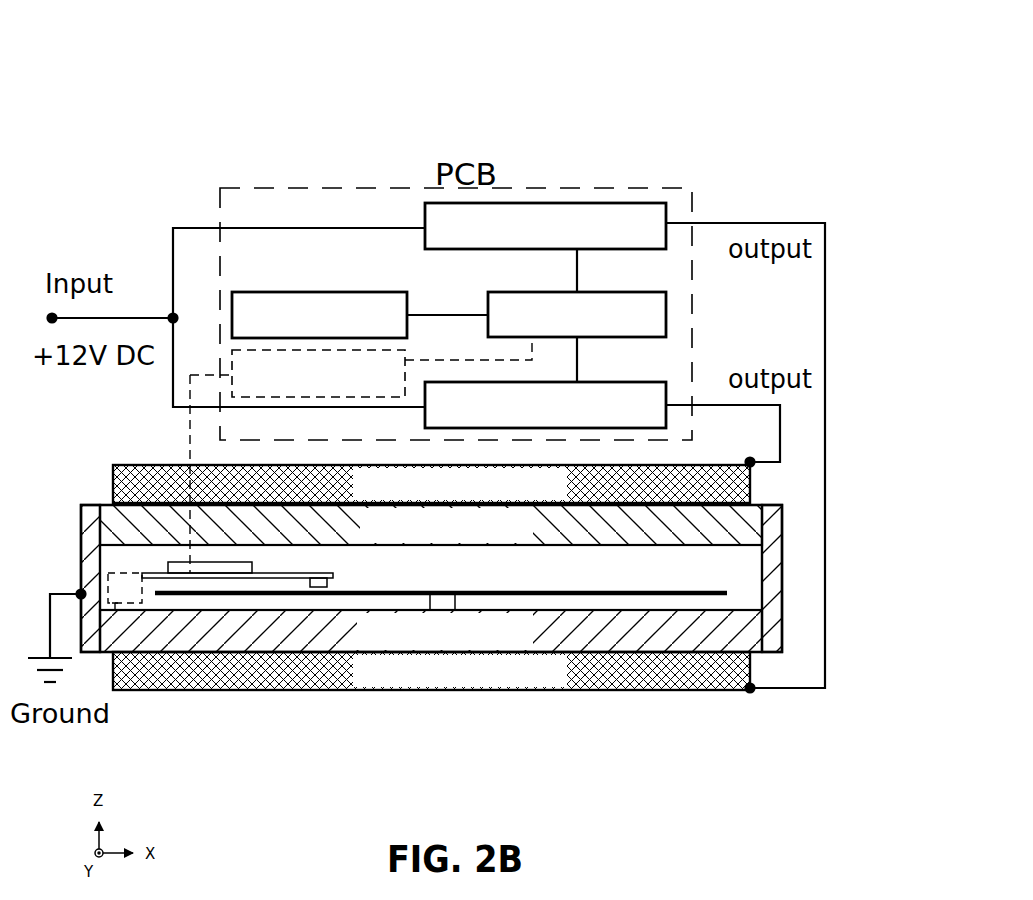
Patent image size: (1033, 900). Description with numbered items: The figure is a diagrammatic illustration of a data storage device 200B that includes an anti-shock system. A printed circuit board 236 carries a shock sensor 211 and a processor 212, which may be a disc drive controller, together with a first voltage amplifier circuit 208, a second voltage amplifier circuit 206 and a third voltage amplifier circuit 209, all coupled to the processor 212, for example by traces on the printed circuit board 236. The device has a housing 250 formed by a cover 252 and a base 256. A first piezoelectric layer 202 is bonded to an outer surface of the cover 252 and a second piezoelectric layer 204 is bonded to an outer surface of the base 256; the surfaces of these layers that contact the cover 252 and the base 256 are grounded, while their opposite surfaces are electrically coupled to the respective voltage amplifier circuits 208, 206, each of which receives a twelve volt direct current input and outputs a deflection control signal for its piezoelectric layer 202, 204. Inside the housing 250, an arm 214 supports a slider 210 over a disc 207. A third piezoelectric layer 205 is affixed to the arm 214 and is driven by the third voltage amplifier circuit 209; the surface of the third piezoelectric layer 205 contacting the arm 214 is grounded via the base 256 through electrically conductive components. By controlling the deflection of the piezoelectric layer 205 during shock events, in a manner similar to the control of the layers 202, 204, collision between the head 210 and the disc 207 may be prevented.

The data storage device 200B is at (732, 86).
The printed circuit board 236 is at (318, 188).
The voltage amplifier circuit 208 is at (650, 205).
The shock sensor 211 is at (257, 300).
The processor 212 is at (503, 297).
The third voltage amplifier circuit 209 is at (412, 357).
The voltage amplifier circuit 206 is at (615, 385).
The first piezoelectric layer 202 is at (143, 465).
The second piezoelectric layer 204 is at (665, 665).
The housing 250 is at (62, 548).
The cover 252 is at (730, 518).
The base 256 is at (287, 635).
The arm 214 is at (160, 572).
The third piezoelectric layer 205 is at (245, 569).
The slider 210 is at (327, 582).
The disc 207 is at (662, 588).